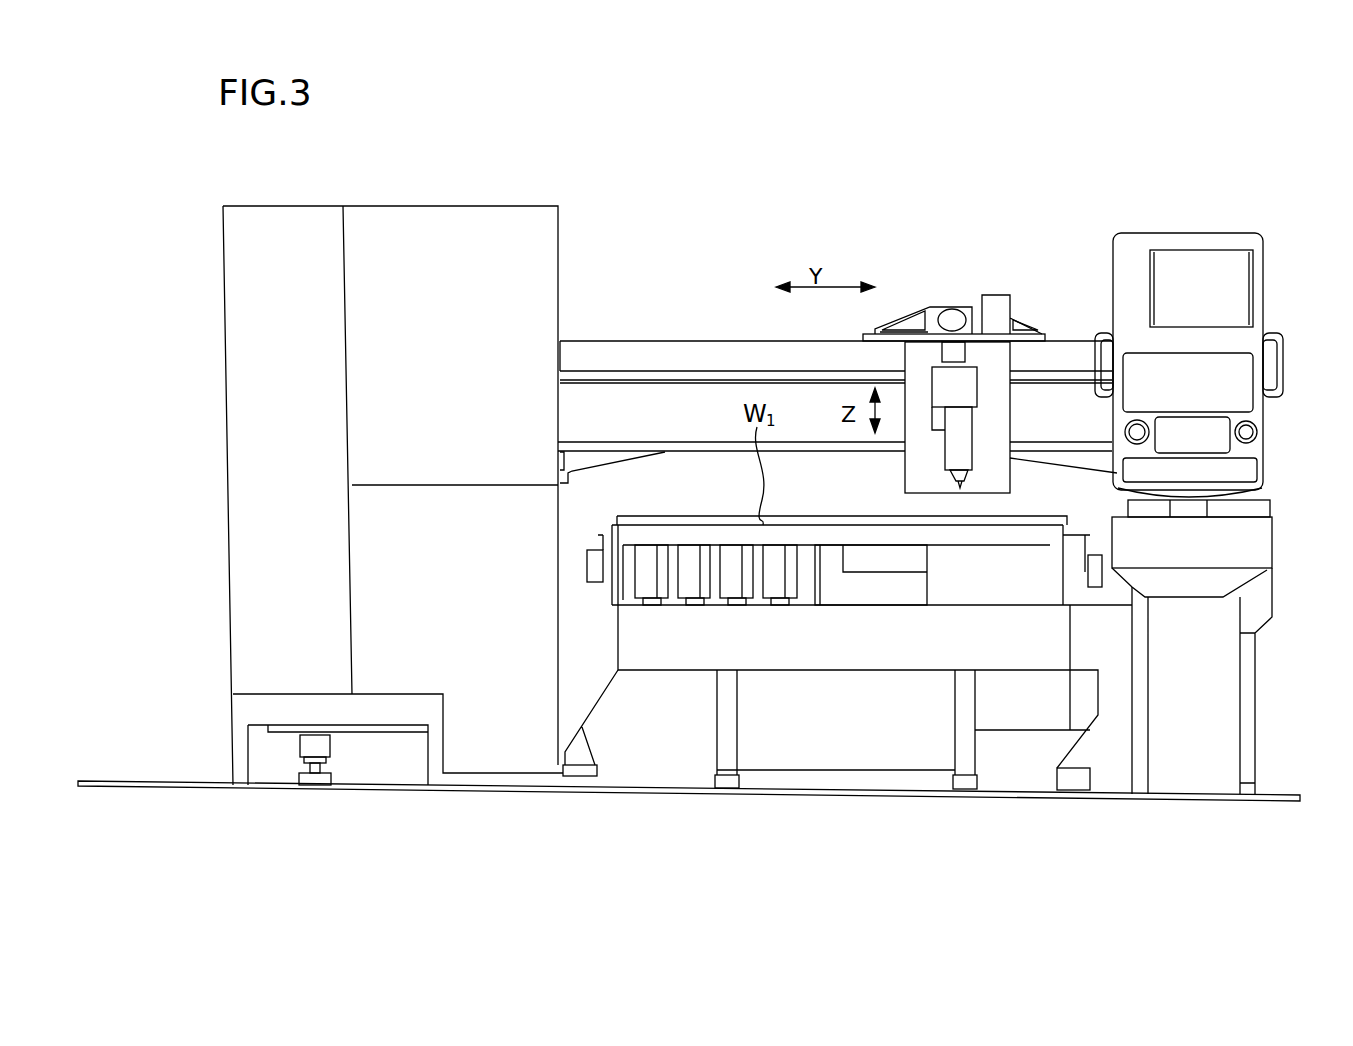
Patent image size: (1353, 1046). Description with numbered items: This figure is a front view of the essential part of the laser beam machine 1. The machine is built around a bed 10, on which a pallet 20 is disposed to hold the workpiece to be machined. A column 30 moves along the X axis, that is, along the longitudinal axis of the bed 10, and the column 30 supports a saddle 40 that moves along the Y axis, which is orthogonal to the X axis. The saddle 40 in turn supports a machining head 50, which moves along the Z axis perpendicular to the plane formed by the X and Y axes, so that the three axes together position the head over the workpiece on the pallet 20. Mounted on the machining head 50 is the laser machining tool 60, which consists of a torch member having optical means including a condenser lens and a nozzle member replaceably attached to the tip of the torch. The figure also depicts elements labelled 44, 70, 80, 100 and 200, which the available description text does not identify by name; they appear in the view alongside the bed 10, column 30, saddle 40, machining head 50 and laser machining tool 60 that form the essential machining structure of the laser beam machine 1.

The laser beam machine 1 is at (903, 234).
The bed 10 is at (1247, 702).
The pallet 20 is at (1073, 563).
The column 30 is at (736, 365).
The saddle 40 is at (932, 308).
The guide rail 44 is at (640, 383).
The machining head 50 is at (957, 388).
The laser machining tool 60 is at (958, 447).
The cabinet 70 is at (444, 495).
The control panel 80 is at (1248, 335).
The bed 100 is at (993, 597).
The work table 200 is at (680, 640).